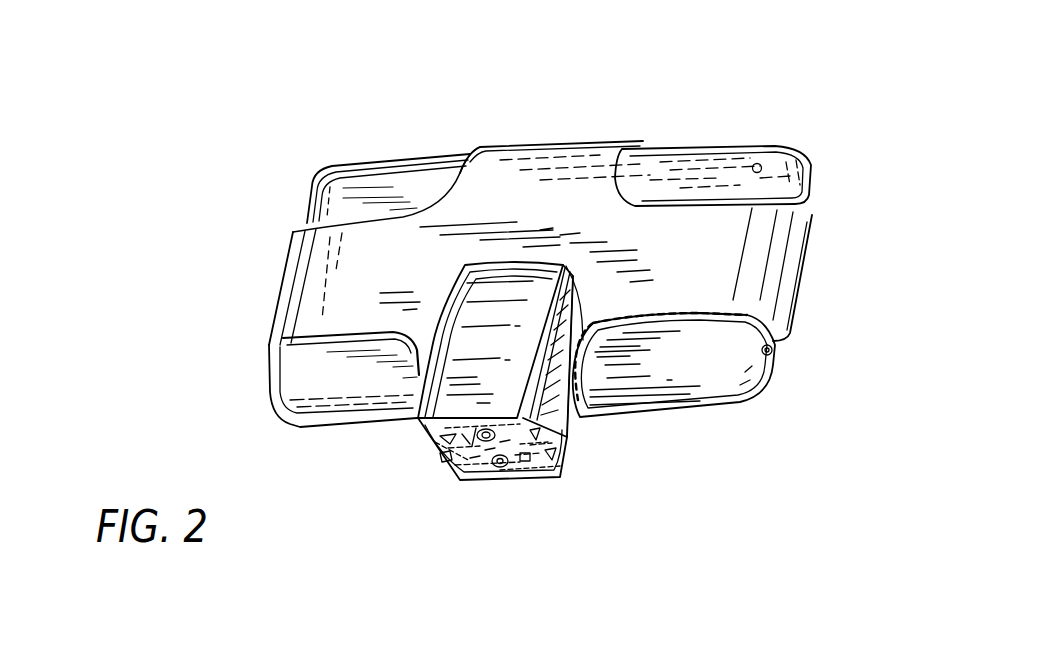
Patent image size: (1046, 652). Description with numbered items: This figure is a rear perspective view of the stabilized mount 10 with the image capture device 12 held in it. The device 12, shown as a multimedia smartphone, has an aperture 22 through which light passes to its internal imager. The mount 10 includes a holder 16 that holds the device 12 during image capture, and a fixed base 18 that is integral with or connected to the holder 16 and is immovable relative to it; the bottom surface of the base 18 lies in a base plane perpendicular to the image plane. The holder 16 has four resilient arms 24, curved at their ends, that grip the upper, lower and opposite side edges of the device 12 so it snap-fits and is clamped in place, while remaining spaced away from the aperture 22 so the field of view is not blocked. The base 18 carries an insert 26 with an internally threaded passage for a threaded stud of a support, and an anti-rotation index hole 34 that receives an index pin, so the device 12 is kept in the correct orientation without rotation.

The stabilized mount 10 is at (432, 489).
The image capture device 12 is at (401, 160).
The holder 16 is at (527, 197).
The fixed base 18 is at (573, 432).
The aperture 22 is at (756, 162).
The arms 24 is at (591, 143).
The insert 26 is at (417, 432).
The anti-rotation index hole 34 is at (500, 470).